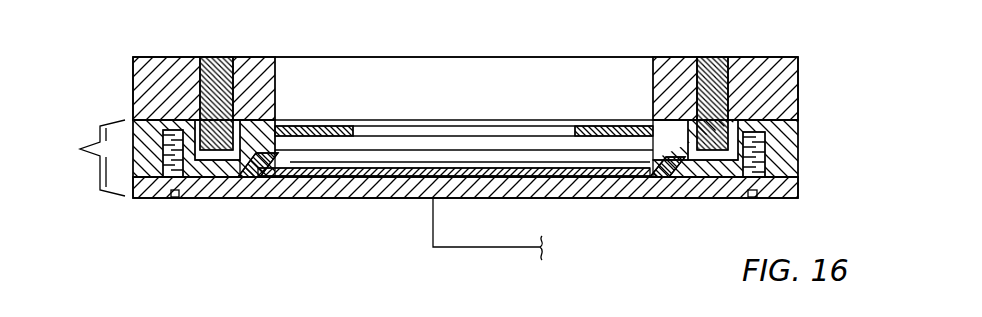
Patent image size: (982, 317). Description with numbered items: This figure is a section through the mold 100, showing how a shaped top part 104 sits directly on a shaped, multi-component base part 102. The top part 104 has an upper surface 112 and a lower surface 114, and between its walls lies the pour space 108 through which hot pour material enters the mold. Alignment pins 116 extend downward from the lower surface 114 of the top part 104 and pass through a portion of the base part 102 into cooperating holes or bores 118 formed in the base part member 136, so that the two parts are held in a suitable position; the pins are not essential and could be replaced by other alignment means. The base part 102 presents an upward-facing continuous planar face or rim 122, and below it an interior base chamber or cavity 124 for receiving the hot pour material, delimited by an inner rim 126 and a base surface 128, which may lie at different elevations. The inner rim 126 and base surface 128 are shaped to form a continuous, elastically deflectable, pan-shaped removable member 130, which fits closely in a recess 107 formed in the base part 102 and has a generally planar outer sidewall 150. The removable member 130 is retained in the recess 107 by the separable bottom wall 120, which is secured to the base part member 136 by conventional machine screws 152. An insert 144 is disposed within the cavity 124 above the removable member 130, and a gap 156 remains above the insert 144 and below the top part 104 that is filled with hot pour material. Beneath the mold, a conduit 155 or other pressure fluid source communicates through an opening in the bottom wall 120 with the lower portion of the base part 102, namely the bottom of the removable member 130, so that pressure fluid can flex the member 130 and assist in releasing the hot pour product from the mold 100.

The mold 100 is at (873, 74).
The base part 102 is at (77, 158).
The top part 104 is at (133, 75).
The recess 107 is at (652, 198).
The pour space 108 is at (496, 41).
The upper surface 112 is at (793, 20).
The lower surface 114 is at (800, 133).
The alignment pins 116 is at (212, 57).
The holes 118 is at (208, 162).
The bottom wall 120 is at (800, 190).
The rim 122 is at (133, 119).
The cavity 124 is at (430, 146).
The inner rim 126 is at (266, 162).
The base surface 128 is at (372, 158).
The removable member 130 is at (536, 198).
The base part member 136 is at (800, 166).
The insert 144 is at (341, 126).
The outer sidewall 150 is at (250, 165).
The machine screws 152 is at (138, 200).
The conduit 155 is at (500, 250).
The gap 156 is at (540, 96).